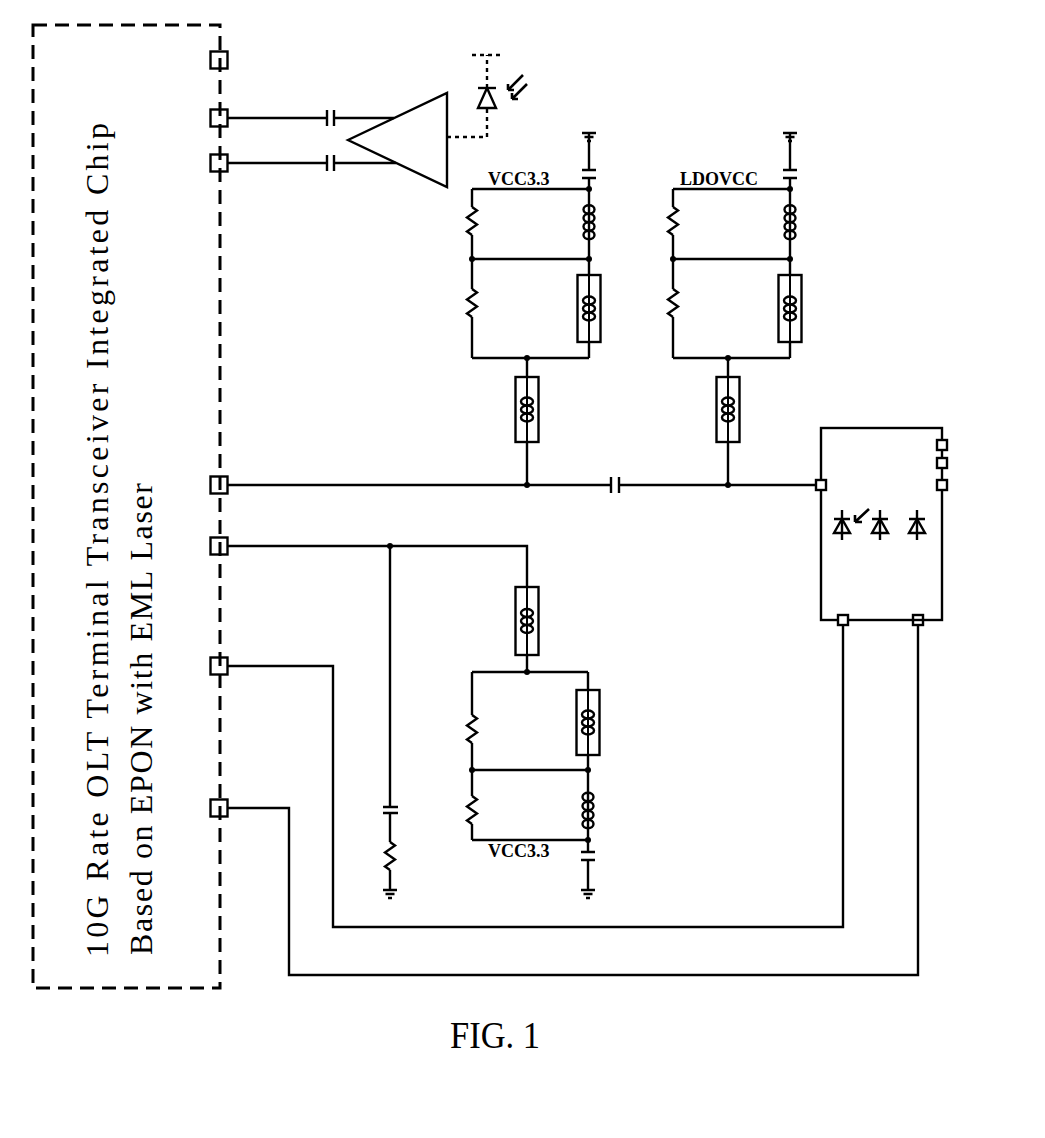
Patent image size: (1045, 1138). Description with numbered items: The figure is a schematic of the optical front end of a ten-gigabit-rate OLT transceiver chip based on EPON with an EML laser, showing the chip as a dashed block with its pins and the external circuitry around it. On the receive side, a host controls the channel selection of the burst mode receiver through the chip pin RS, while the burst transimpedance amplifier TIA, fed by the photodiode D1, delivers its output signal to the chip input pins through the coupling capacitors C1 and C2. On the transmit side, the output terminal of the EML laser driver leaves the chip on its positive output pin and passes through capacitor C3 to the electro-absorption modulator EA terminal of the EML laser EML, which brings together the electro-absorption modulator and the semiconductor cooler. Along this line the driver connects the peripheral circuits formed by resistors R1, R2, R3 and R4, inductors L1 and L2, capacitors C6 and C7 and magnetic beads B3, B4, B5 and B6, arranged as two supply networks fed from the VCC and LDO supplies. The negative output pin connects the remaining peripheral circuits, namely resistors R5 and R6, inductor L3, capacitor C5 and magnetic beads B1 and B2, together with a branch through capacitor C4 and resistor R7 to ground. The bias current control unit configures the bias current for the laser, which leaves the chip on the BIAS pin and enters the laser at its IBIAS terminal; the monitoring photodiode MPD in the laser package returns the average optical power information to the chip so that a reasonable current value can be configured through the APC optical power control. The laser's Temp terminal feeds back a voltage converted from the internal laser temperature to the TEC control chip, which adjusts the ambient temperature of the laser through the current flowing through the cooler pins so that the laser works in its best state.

The chip pin RS is at (235, 61).
The capacitor C1 is at (356, 108).
The capacitor C2 is at (357, 173).
The burst transimpedance amplifier TIA is at (397, 140).
The photodiode D1 is at (487, 96).
The resistor R1 is at (457, 221).
The resistor R2 is at (457, 303).
The resistor R3 is at (658, 221).
The resistor R4 is at (658, 303).
The resistor R5 is at (456, 729).
The resistor R6 is at (456, 810).
The resistor R7 is at (402, 870).
The inductor L1 is at (603, 222).
The inductor L2 is at (803, 222).
The inductor L3 is at (602, 812).
The magnetic bead B1 is at (603, 722).
The magnetic bead B2 is at (540, 621).
The magnetic bead B3 is at (541, 409).
The magnetic bead B4 is at (714, 409).
The magnetic bead B5 is at (603, 308).
The magnetic bead B6 is at (803, 308).
The capacitor C3 is at (709, 475).
The capacitor C4 is at (375, 694).
The capacitor C5 is at (601, 872).
The capacitor C6 is at (602, 161).
The capacitor C7 is at (803, 161).
The bias current pin BIAS is at (527, 776).
The monitoring photodiode MPD is at (569, 786).
The EML laser EML is at (881, 524).
The electro-absorption modulator EA is at (835, 485).
The Temp pin Temp is at (918, 485).
The IBIAS pin IBIAS is at (848, 611).